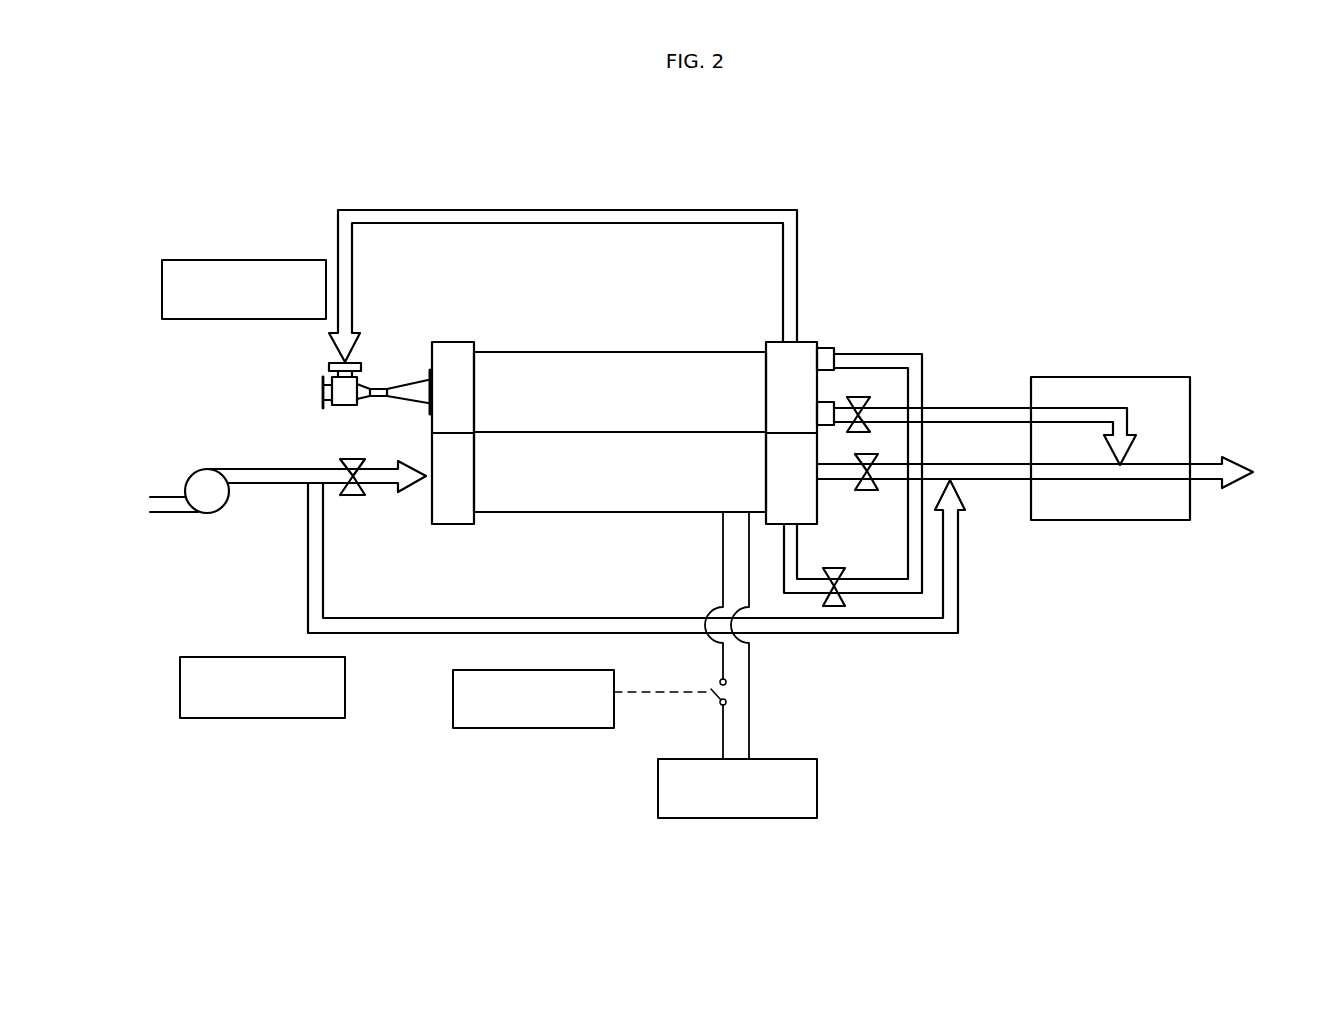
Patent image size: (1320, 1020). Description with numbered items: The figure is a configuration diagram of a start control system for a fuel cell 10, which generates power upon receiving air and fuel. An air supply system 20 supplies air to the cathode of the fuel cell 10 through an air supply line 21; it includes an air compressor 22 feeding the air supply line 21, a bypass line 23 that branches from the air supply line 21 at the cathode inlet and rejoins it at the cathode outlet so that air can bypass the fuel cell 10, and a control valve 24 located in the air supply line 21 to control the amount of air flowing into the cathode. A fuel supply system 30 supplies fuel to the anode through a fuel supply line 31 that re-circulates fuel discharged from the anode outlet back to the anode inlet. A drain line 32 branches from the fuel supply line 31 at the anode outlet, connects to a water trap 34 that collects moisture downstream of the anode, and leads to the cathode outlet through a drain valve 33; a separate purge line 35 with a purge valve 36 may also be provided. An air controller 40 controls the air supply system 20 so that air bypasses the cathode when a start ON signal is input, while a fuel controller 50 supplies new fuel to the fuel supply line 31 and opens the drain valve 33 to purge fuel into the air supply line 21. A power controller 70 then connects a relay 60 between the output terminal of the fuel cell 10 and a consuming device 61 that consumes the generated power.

The fuel cell 10 is at (585, 514).
The air supply system 20 is at (701, 583).
The air supply line 21 is at (380, 485).
The air compressor 22 is at (218, 505).
The bypass line 23 is at (418, 634).
The control valve 24 is at (355, 496).
The fuel supply system 30 is at (756, 406).
The fuel supply line 31 is at (606, 210).
The drain line 32 is at (982, 406).
The drain valve 33 is at (861, 395).
The water trap 34 is at (829, 400).
The purge line 35 is at (922, 353).
The purge valve 36 is at (833, 607).
The air controller 40 is at (258, 719).
The fuel controller 50 is at (233, 260).
The relay 60 is at (711, 697).
The consuming device 61 is at (737, 819).
The power controller 70 is at (565, 729).